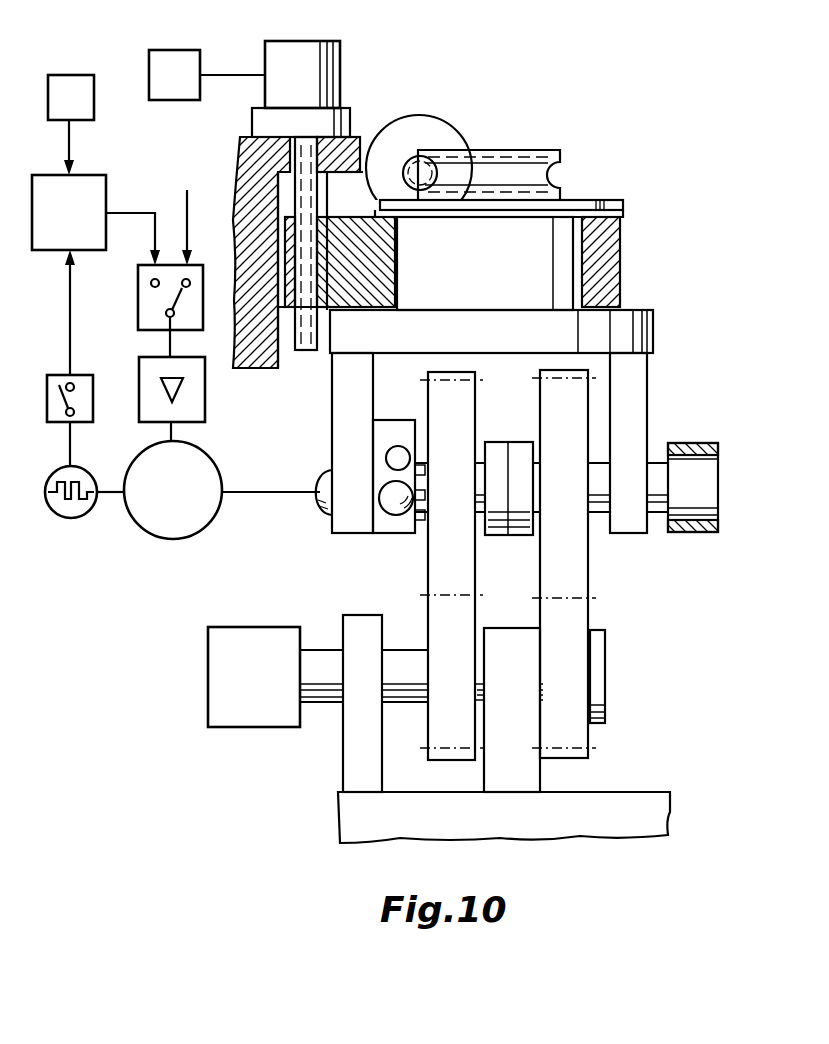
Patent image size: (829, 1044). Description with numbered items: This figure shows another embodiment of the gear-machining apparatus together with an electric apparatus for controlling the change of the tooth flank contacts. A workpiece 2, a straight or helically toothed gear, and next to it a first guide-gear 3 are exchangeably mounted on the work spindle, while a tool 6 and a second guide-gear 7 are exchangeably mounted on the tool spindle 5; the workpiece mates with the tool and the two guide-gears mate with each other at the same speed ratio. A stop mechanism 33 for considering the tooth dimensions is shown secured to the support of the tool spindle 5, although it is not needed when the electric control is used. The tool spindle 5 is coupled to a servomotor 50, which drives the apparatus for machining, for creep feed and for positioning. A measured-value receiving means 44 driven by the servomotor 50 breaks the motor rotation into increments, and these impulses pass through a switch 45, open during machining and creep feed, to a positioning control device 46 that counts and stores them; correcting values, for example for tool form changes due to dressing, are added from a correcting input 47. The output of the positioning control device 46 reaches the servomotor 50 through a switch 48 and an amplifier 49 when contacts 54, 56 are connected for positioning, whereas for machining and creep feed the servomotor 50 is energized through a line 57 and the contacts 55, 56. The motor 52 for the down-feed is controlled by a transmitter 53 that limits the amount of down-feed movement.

The workpiece 2 is at (580, 733).
The first guide-gear 3 is at (441, 630).
The tool spindle 5 is at (597, 505).
The tool 6 is at (575, 578).
The second guide-gear 7 is at (440, 575).
The stop mechanism 33 is at (378, 542).
The measured-value receiving means 44 is at (82, 507).
The switch 45 is at (63, 378).
The positioning control device 46 is at (85, 229).
The correcting input 47 is at (62, 78).
The switch 48 is at (161, 294).
The amplifier 49 is at (195, 405).
The servomotor 50 is at (189, 505).
The motor 52 is at (312, 40).
The transmitter 53 is at (160, 52).
The contact 54 is at (150, 283).
The contact 55 is at (205, 261).
The contact 56 is at (165, 316).
The line 57 is at (186, 212).